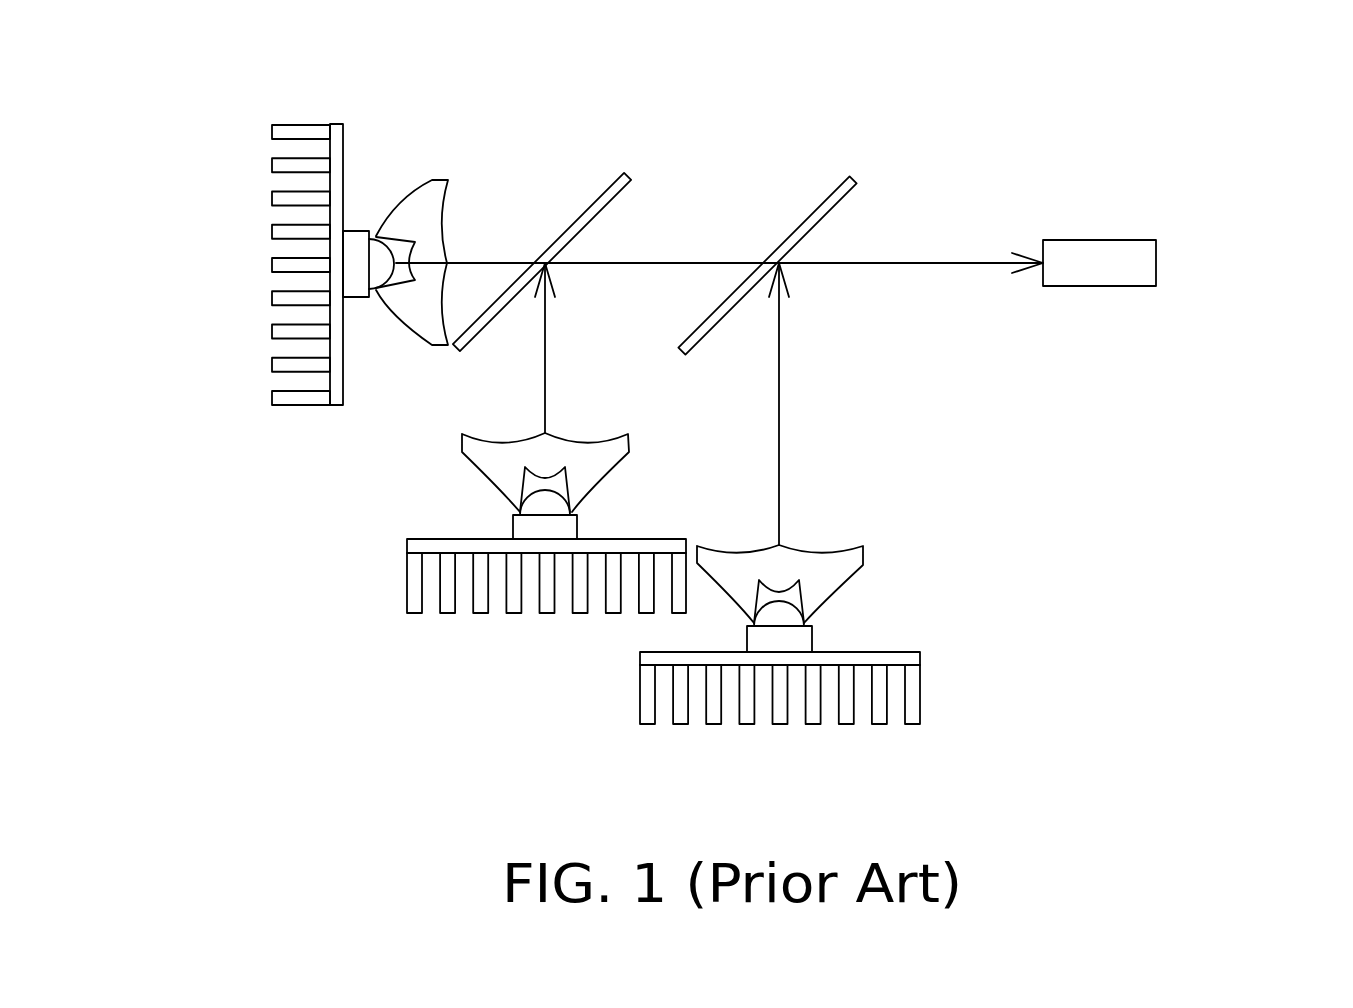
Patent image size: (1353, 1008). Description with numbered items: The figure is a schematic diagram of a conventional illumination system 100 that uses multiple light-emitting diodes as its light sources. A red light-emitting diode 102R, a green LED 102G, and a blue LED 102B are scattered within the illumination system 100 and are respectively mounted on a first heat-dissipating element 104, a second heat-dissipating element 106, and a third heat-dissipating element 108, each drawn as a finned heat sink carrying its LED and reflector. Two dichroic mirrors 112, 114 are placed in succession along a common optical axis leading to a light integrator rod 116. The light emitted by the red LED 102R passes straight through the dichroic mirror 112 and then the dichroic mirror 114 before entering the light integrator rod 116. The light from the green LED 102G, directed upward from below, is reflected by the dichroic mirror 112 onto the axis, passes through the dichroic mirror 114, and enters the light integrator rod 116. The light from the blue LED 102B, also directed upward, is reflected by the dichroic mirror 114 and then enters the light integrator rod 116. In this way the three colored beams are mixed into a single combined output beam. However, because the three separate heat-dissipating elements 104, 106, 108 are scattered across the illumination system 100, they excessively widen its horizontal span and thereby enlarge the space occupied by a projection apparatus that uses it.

The illumination system 100 is at (1282, 62).
The red light-emitting diode 102R is at (357, 231).
The green LED 102G is at (512, 526).
The blue LED 102B is at (812, 640).
The first heat-dissipating element 104 is at (298, 405).
The second heat-dissipating element 106 is at (407, 577).
The third heat-dissipating element 108 is at (920, 693).
The dichroic mirror 112 is at (627, 175).
The dichroic mirror 114 is at (857, 182).
The light integrator rod 116 is at (1100, 287).